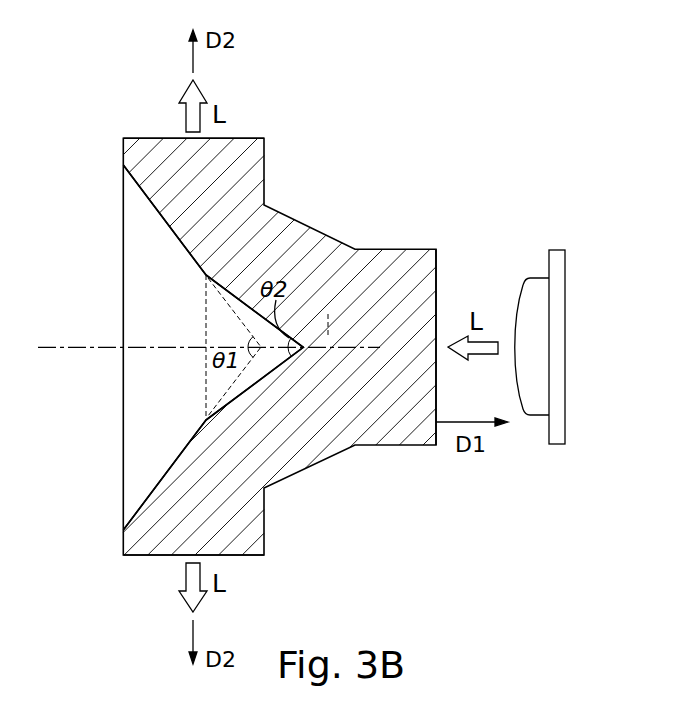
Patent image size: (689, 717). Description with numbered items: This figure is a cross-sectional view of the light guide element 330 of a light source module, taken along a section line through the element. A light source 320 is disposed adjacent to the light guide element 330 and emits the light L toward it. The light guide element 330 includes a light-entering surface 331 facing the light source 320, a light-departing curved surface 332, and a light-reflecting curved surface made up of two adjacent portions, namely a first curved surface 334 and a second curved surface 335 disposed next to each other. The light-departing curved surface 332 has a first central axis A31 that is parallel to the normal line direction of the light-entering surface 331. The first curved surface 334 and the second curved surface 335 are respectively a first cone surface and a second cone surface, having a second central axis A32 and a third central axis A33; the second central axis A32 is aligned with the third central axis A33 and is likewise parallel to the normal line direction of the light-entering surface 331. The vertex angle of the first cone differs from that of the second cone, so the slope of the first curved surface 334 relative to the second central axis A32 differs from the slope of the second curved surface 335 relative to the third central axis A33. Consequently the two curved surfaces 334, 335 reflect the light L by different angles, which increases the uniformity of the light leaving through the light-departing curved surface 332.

The light source 320 is at (558, 323).
The light guide element 330 is at (310, 222).
The light-entering surface 331 is at (437, 273).
The light-departing curved surface 332 is at (243, 138).
The first curved surface 334 is at (170, 464).
The second curved surface 335 is at (250, 378).
The first central axis A31 is at (83, 347).
The second central axis A32 is at (206, 340).
The third central axis A33 is at (344, 339).